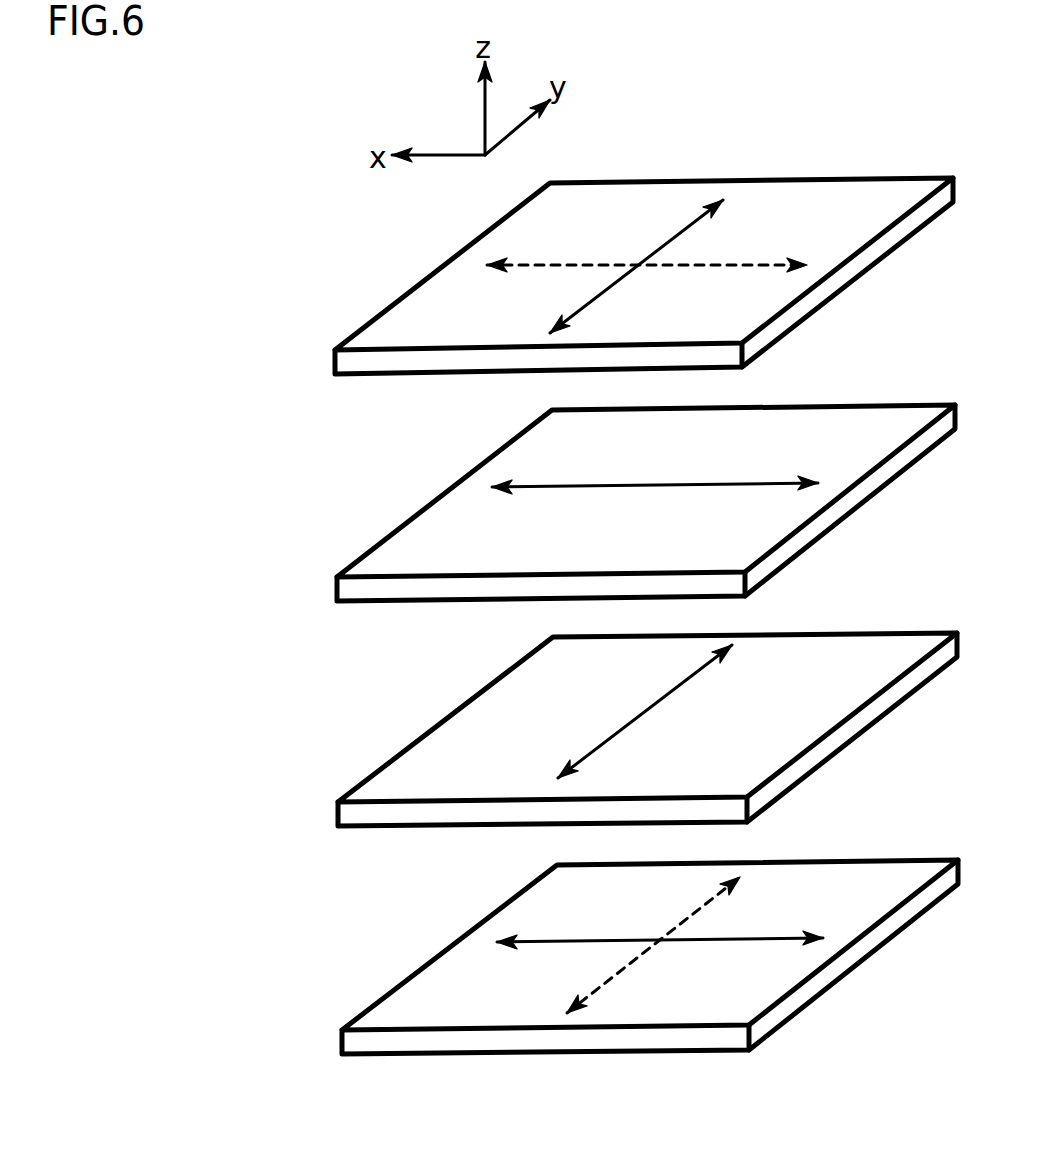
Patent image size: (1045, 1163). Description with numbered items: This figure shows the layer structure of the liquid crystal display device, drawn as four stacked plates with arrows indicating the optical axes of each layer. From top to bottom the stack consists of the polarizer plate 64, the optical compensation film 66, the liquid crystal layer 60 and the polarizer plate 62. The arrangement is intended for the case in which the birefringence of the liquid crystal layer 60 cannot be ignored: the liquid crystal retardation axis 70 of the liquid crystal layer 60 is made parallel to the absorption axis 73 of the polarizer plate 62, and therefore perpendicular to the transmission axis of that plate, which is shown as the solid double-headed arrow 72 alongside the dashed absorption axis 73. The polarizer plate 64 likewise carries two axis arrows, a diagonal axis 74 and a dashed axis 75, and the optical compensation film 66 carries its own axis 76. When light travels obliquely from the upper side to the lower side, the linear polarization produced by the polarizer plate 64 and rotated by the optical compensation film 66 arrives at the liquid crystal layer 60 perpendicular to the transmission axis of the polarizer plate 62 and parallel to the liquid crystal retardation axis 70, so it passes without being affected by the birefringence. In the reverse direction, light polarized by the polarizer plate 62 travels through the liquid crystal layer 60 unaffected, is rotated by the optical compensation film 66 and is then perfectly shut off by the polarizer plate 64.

The liquid crystal layer 60 is at (428, 735).
The polarizer plate 62 is at (428, 962).
The polarizer plate 64 is at (420, 282).
The optical compensation film 66 is at (425, 507).
The liquid crystal retardation axis 70 is at (648, 708).
The transmission axis of lower polarizing plate 72 is at (727, 940).
The absorption axis 73 is at (678, 922).
The rubbing direction at upper substrate 74 is at (660, 243).
The absorption axis of upper polarizing plate 75 is at (728, 263).
The optical axis of retardation film 76 is at (651, 484).